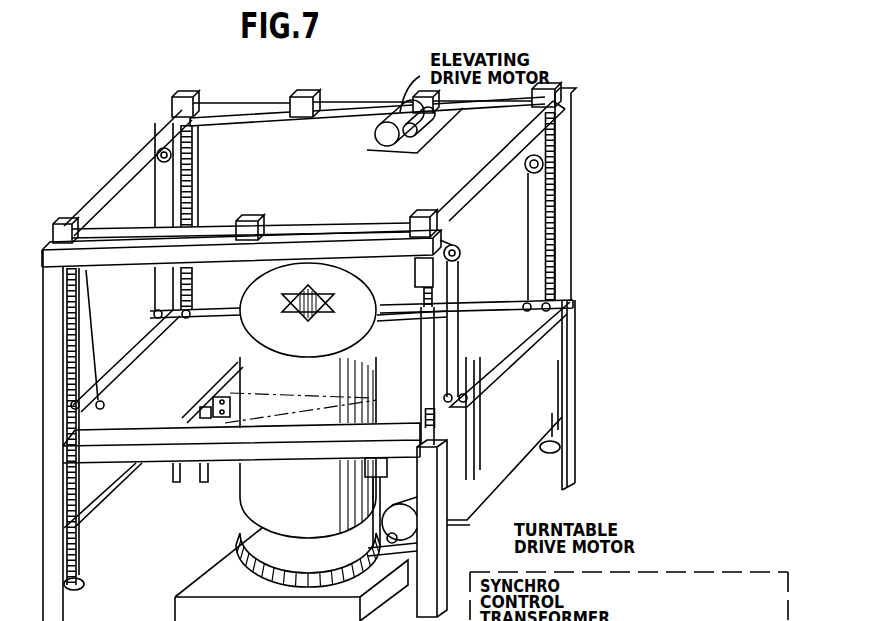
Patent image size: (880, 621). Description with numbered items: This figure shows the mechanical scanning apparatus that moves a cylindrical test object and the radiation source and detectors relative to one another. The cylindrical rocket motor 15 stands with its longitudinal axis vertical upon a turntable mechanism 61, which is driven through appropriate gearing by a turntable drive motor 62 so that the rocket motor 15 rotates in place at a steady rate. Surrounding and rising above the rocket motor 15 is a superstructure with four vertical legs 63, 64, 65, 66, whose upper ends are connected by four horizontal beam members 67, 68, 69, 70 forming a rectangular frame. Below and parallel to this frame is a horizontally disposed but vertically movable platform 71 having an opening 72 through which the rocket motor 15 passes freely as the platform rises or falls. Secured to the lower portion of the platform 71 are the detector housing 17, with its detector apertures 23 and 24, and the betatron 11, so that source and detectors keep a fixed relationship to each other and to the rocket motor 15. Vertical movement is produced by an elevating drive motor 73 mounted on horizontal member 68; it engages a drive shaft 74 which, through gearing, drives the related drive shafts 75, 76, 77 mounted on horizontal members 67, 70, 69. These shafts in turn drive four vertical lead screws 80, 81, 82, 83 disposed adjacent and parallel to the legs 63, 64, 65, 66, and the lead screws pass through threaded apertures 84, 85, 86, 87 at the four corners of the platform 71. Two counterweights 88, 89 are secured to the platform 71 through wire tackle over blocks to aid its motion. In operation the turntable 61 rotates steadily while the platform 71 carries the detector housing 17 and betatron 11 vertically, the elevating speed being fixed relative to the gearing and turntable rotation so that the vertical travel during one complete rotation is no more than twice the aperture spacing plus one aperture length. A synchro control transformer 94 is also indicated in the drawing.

The betatron 11 is at (388, 465).
The cylindrical rocket motor 15 is at (243, 330).
The detector housing 17 is at (208, 392).
The detector aperture 23 is at (238, 372).
The detector aperture 24 is at (220, 410).
The turntable mechanism 61 is at (240, 548).
The turntable drive motor 62 is at (512, 528).
The vertical leg 63 is at (70, 611).
The vertical leg 64 is at (183, 483).
The vertical leg 65 is at (570, 462).
The vertical leg 66 is at (443, 555).
The horizontal member 67 is at (112, 199).
The horizontal member 68 is at (263, 112).
The horizontal member 69 is at (551, 126).
The horizontal member 70 is at (227, 252).
The movable platform 71 is at (217, 291).
The opening 72 is at (395, 310).
The elevating drive motor 73 is at (378, 127).
The drive shaft 74 is at (357, 102).
The drive shaft 75 is at (145, 146).
The drive shaft 76 is at (207, 225).
The drive shaft 77 is at (482, 168).
The vertical lead screw 80 is at (60, 311).
The vertical lead screw 81 is at (193, 173).
The vertical lead screw 82 is at (551, 170).
The vertical lead screw 83 is at (433, 298).
The threaded aperture 84 is at (74, 432).
The threaded aperture 85 is at (178, 325).
The threaded aperture 86 is at (524, 309).
The threaded aperture 87 is at (437, 418).
The counterweight 88 is at (503, 472).
The counterweight 89 is at (130, 348).
The synchro control transformer 94 is at (640, 620).